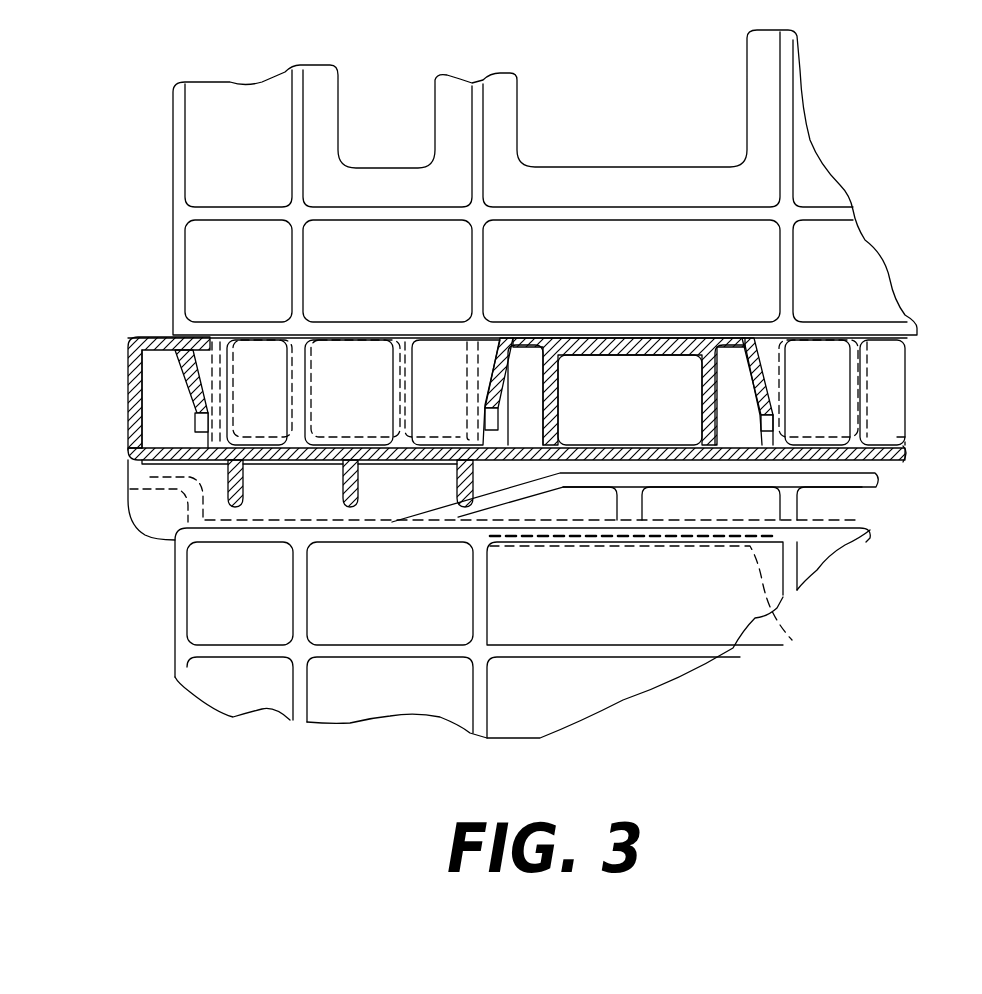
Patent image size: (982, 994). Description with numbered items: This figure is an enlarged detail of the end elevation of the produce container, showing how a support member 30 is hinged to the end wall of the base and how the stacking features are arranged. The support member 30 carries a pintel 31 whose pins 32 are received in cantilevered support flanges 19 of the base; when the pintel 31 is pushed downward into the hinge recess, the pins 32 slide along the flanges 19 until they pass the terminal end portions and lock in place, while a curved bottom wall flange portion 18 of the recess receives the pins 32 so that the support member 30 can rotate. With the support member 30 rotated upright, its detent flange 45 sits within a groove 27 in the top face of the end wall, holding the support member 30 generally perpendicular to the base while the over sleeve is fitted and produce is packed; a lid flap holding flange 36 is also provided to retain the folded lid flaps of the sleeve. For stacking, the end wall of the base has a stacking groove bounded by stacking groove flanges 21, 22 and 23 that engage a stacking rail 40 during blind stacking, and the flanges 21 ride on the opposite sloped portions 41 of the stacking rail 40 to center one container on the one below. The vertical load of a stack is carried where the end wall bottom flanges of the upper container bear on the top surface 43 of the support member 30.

The bottom wall flange portion 18 is at (270, 442).
The cantilevered support flange 19 is at (183, 377).
The stacking groove flange 21 is at (455, 487).
The stacking groove flange 22 is at (342, 498).
The stacking groove flange 23 is at (243, 498).
The groove 27 is at (555, 345).
The support member 30 is at (720, 278).
The pintel 31 is at (366, 401).
The pin 32 is at (194, 426).
The lid flap holding flange 36 is at (656, 604).
The stacking rail 40 is at (732, 482).
The sloped portion 41 is at (522, 497).
The top surface 43 is at (843, 520).
The detent flange 45 is at (607, 345).